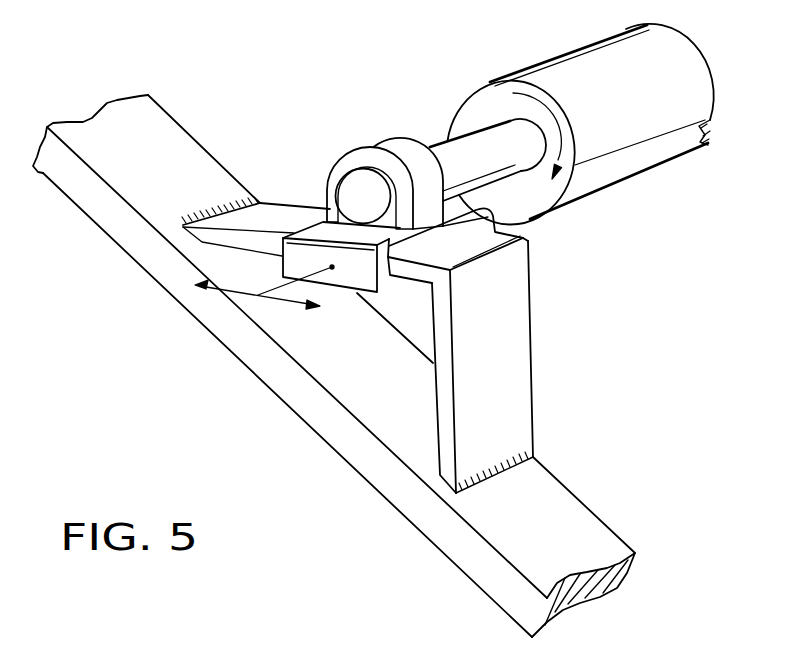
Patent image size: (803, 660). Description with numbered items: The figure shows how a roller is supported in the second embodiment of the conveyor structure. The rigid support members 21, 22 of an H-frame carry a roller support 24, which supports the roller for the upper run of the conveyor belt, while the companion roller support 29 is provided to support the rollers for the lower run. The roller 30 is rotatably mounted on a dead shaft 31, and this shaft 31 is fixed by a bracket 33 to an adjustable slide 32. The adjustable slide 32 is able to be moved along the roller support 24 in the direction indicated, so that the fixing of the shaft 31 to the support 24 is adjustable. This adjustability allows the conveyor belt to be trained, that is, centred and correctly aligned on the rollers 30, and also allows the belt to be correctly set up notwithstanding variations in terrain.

The rigid support member 21 is at (334, 366).
The rigid support member 22 is at (256, 226).
The roller support 24 is at (525, 350).
The roller support 29 is at (505, 377).
The roller 30 is at (636, 163).
The dead shaft 31 is at (460, 152).
The adjustable slide 32 is at (353, 283).
The bracket 33 is at (393, 143).